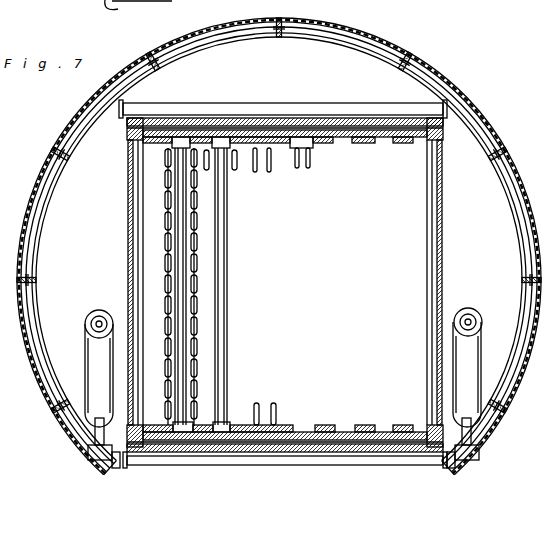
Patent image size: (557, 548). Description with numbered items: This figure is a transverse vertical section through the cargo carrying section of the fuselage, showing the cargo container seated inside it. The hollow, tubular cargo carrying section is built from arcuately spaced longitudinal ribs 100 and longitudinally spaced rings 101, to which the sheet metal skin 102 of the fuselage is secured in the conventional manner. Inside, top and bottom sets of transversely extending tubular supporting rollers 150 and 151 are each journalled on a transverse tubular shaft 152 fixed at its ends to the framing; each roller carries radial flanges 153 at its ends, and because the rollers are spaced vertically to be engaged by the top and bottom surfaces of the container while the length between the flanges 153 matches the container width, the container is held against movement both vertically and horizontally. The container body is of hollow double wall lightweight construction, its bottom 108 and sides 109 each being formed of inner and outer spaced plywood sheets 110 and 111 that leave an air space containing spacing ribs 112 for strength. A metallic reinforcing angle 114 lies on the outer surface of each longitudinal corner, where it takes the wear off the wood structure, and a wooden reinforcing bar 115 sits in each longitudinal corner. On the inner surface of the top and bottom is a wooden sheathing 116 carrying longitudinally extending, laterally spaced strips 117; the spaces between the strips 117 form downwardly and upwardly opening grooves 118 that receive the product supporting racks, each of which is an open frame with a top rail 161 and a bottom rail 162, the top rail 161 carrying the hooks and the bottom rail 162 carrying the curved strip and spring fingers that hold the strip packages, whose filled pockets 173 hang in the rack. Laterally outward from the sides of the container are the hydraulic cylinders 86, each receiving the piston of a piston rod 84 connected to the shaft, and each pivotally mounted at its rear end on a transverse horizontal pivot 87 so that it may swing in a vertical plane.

The piston rod 84 is at (99, 316).
The hydraulic cylinder 86 is at (86, 318).
The transverse horizontal pivot 87 is at (97, 432).
The longitudinal rib 100 is at (293, 38).
The ring 101 is at (197, 48).
The sheet metal skin 102 is at (462, 82).
The bottom 108 is at (296, 452).
The side 109 is at (128, 197).
The inner plywood sheet 110 is at (387, 117).
The outer plywood sheet 111 is at (347, 129).
The spacing rib 112 is at (438, 188).
The metallic reinforcing angle 114 is at (441, 128).
The reinforcing bar 115 is at (139, 128).
The wooden sheathing 116 is at (307, 425).
The strip 117 is at (325, 144).
The groove 118 is at (383, 144).
The top supporting roller 150 is at (229, 112).
The bottom supporting roller 151 is at (285, 457).
The transverse tubular shaft 152 is at (263, 248).
The radial flange 153 is at (108, 96).
The top rail 161 is at (183, 137).
The bottom rail 162 is at (185, 433).
The filled pocket 173 is at (197, 299).